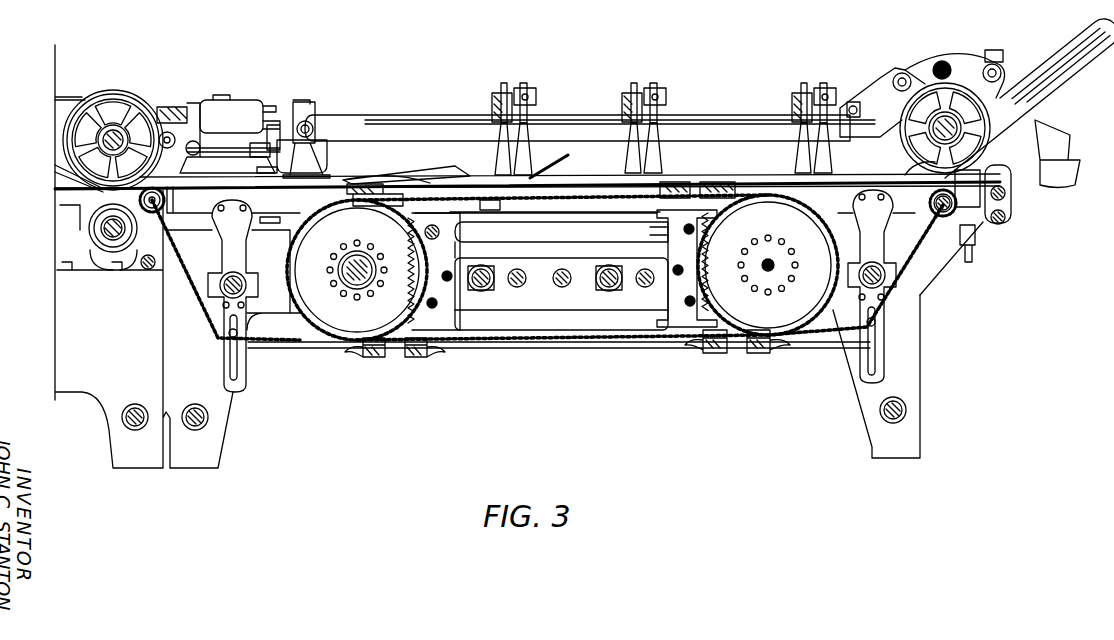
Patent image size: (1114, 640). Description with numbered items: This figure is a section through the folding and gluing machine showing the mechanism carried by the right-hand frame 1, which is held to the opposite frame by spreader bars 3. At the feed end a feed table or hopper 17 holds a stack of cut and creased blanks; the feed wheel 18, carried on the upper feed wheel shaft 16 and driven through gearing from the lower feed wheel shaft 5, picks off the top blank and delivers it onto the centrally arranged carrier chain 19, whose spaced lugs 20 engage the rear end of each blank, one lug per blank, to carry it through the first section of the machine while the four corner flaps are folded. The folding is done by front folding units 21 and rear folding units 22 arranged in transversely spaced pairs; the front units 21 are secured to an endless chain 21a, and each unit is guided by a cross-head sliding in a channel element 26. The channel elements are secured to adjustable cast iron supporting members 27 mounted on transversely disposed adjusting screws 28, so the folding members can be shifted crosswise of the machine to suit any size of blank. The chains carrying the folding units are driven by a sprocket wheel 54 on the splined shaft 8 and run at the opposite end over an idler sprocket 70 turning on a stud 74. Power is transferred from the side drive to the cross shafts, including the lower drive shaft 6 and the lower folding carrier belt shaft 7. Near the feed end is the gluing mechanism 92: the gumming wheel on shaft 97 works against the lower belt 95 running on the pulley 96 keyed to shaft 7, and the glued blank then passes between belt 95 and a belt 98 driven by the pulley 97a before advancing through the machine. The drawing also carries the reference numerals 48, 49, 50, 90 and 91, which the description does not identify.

The right-hand frame 1 is at (905, 330).
The spreader bars 3 is at (225, 276).
The lower feed wheel shaft 5 is at (963, 214).
The lower drive shaft 6 is at (145, 267).
The lower folding carrier belt shaft 7 is at (100, 225).
The shaft 8 is at (376, 270).
The upper feed wheel shaft 16 is at (912, 144).
The feed table or hopper 17 is at (1078, 100).
The feed wheel 18 is at (932, 129).
The carrier chain 19 is at (924, 286).
The lugs 20 is at (940, 256).
The front folding units 21 is at (352, 190).
The endless chain 21a is at (630, 342).
The rear folding units 22 is at (496, 205).
The channel element 26 is at (518, 350).
The supporting members 27 is at (591, 262).
The adjusting screws 28 is at (483, 292).
The posts 48 is at (640, 160).
The clamps 49 is at (622, 103).
The bar 50 is at (393, 130).
The sprocket wheel 54 is at (318, 240).
The idler sprocket 70 is at (806, 247).
The stud 74 is at (769, 273).
The wedge bracket 90 is at (360, 178).
The posts 91 is at (521, 170).
The gluing mechanism 92 is at (232, 163).
The lower belt 95 is at (60, 191).
The pulley 96 is at (112, 237).
The shaft 97 is at (123, 131).
The pulley 97a is at (107, 122).
The belt 98 is at (98, 96).